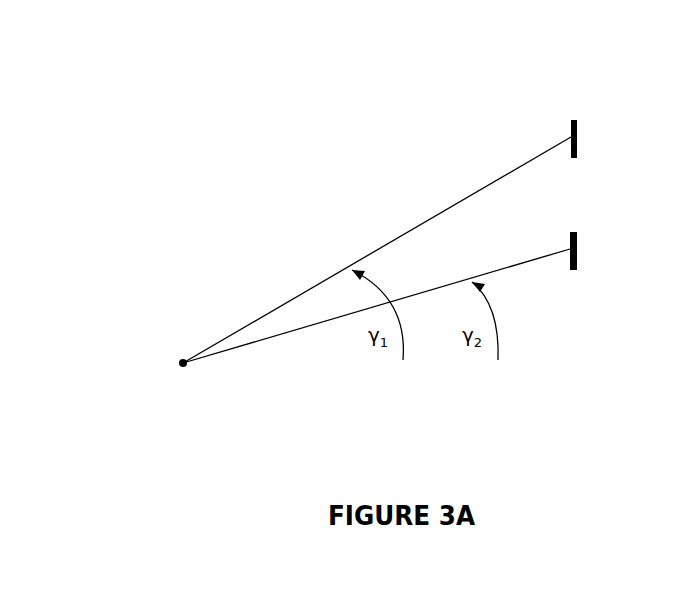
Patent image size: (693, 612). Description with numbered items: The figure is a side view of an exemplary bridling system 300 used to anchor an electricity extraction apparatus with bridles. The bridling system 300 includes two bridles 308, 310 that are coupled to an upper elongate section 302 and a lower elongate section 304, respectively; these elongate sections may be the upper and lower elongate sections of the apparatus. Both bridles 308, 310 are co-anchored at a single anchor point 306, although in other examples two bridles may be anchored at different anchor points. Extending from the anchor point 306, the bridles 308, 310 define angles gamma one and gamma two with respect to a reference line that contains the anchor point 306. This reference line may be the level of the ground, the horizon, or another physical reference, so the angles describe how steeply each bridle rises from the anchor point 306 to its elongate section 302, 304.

The bridling system 300 is at (276, 135).
The upper elongate section 302 is at (571, 129).
The lower elongate section 304 is at (574, 244).
The anchor point 306 is at (178, 359).
The bridle 308 is at (248, 325).
The bridle 310 is at (320, 323).